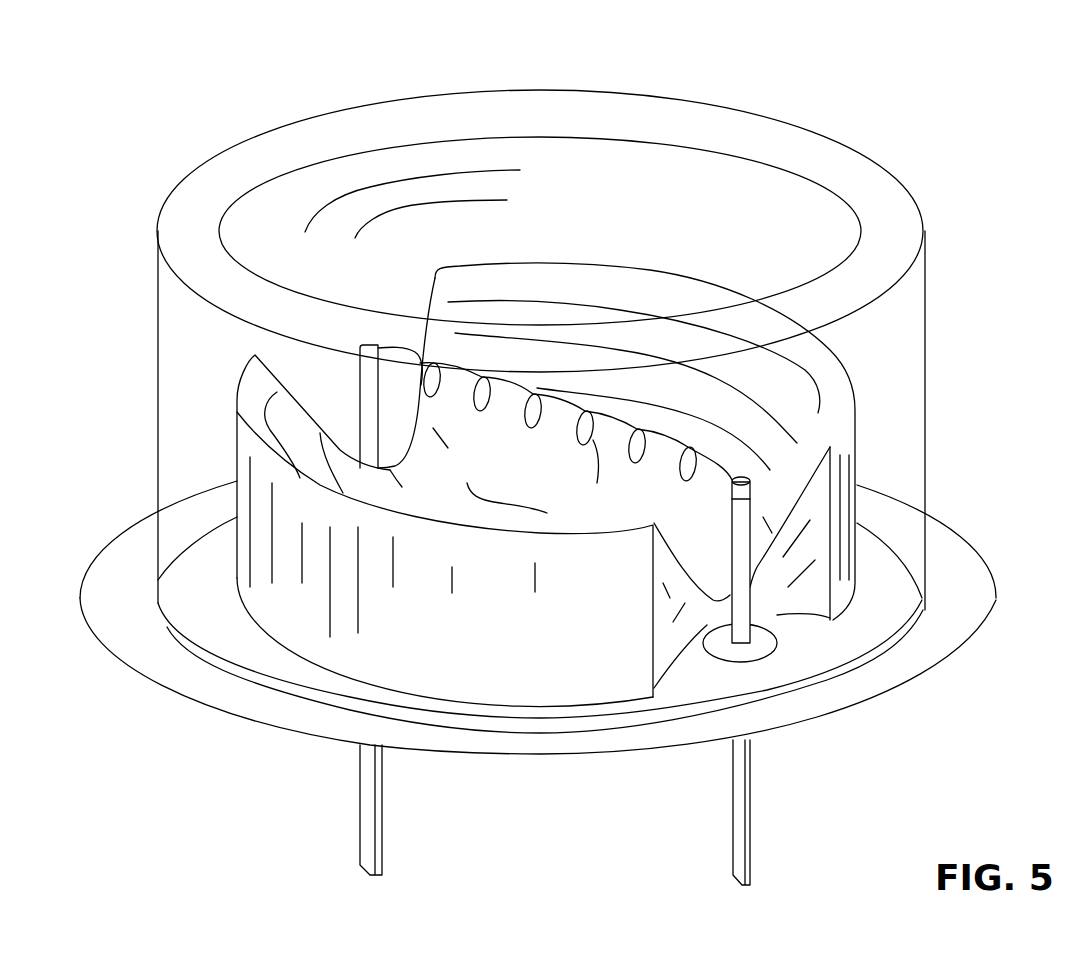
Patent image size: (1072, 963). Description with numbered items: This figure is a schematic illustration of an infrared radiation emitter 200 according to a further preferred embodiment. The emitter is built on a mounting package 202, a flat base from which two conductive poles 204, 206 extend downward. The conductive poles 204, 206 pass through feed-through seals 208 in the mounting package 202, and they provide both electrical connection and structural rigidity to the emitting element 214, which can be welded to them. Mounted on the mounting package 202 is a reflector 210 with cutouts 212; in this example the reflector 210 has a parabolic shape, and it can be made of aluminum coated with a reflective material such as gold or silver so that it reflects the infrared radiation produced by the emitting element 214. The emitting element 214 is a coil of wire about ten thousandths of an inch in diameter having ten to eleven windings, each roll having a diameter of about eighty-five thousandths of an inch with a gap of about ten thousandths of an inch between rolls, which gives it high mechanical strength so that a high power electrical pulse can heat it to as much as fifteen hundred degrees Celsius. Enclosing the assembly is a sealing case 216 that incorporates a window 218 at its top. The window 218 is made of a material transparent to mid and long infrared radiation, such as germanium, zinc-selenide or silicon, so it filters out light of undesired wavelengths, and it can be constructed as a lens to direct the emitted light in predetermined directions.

The infrared radiation emitter 200 is at (782, 68).
The mounting package 202 is at (545, 745).
The conductive pole 204 is at (358, 800).
The conductive pole 206 is at (752, 797).
The feed-through seals 208 is at (778, 640).
The reflector 210 is at (250, 457).
The cutouts 212 is at (800, 502).
The emitting element 214 is at (576, 442).
The sealing case 216 is at (910, 321).
The window 218 is at (283, 217).